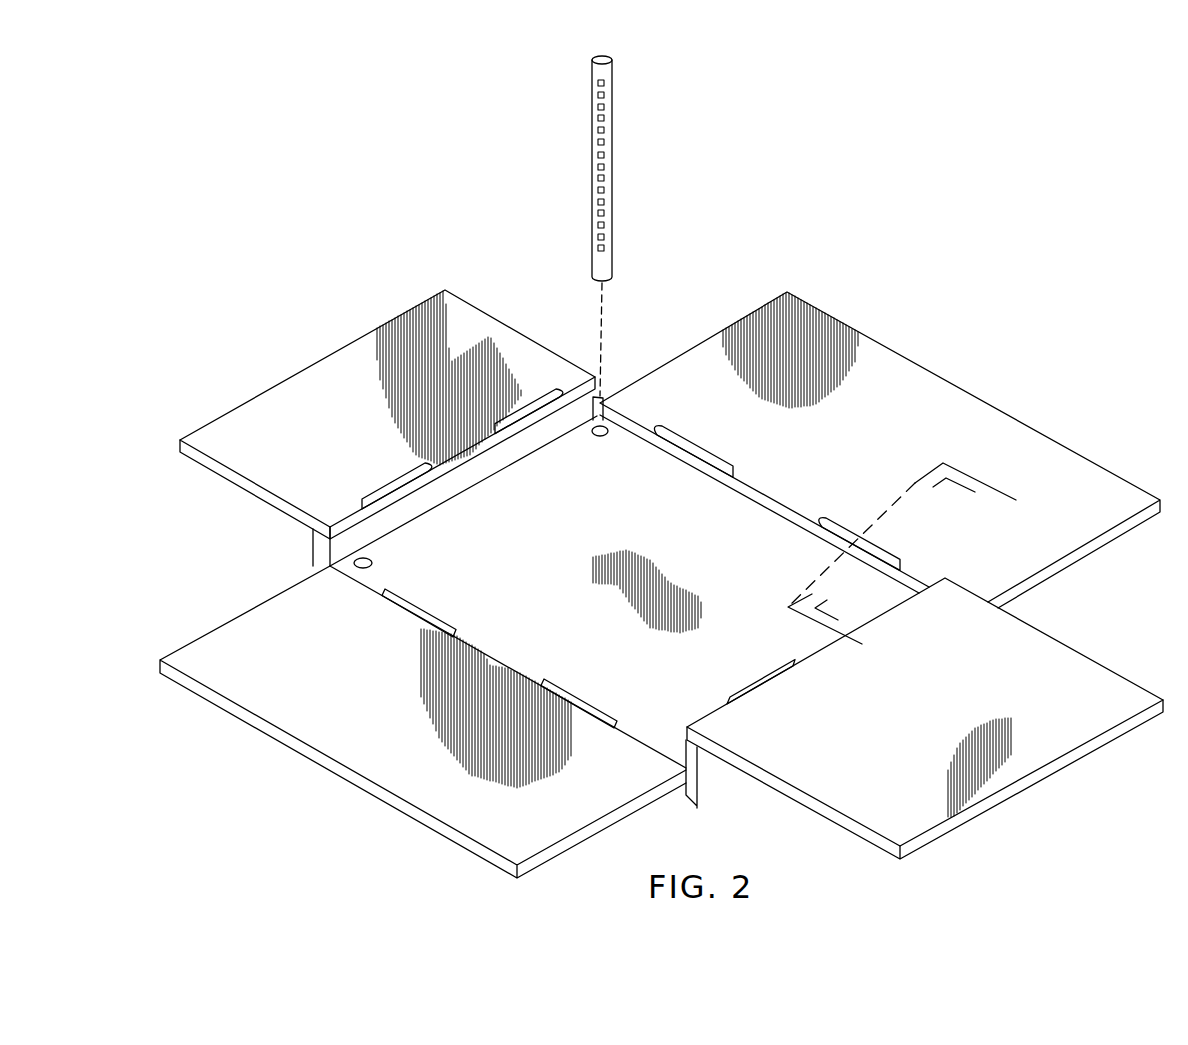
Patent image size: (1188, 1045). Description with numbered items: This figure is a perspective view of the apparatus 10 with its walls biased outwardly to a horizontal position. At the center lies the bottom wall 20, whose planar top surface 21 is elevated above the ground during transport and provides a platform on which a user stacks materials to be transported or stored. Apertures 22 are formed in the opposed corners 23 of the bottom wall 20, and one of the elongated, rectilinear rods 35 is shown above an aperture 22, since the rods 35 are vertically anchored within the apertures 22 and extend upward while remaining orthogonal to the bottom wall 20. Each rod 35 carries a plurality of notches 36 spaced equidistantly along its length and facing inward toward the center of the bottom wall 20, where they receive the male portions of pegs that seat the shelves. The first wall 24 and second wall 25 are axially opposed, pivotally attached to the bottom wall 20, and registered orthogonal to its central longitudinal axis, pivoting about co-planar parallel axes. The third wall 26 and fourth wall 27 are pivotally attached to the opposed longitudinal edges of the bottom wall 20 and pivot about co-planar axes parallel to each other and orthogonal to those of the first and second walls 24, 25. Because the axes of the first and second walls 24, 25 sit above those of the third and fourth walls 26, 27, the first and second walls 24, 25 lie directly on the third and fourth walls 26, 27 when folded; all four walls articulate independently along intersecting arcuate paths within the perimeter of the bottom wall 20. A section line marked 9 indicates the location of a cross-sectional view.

The apparatus 10 is at (1130, 140).
The bottom wall 20 is at (753, 540).
The planar top surface 21 is at (770, 560).
The apertures 22 is at (327, 559).
The opposed corners 23 is at (355, 561).
The first wall 24 is at (1072, 728).
The second wall 25 is at (317, 382).
The third wall 26 is at (295, 722).
The fourth wall 27 is at (1032, 448).
The rods 35 is at (612, 111).
The notches 36 is at (610, 243).
The section line 9- 9 is at (919, 560).